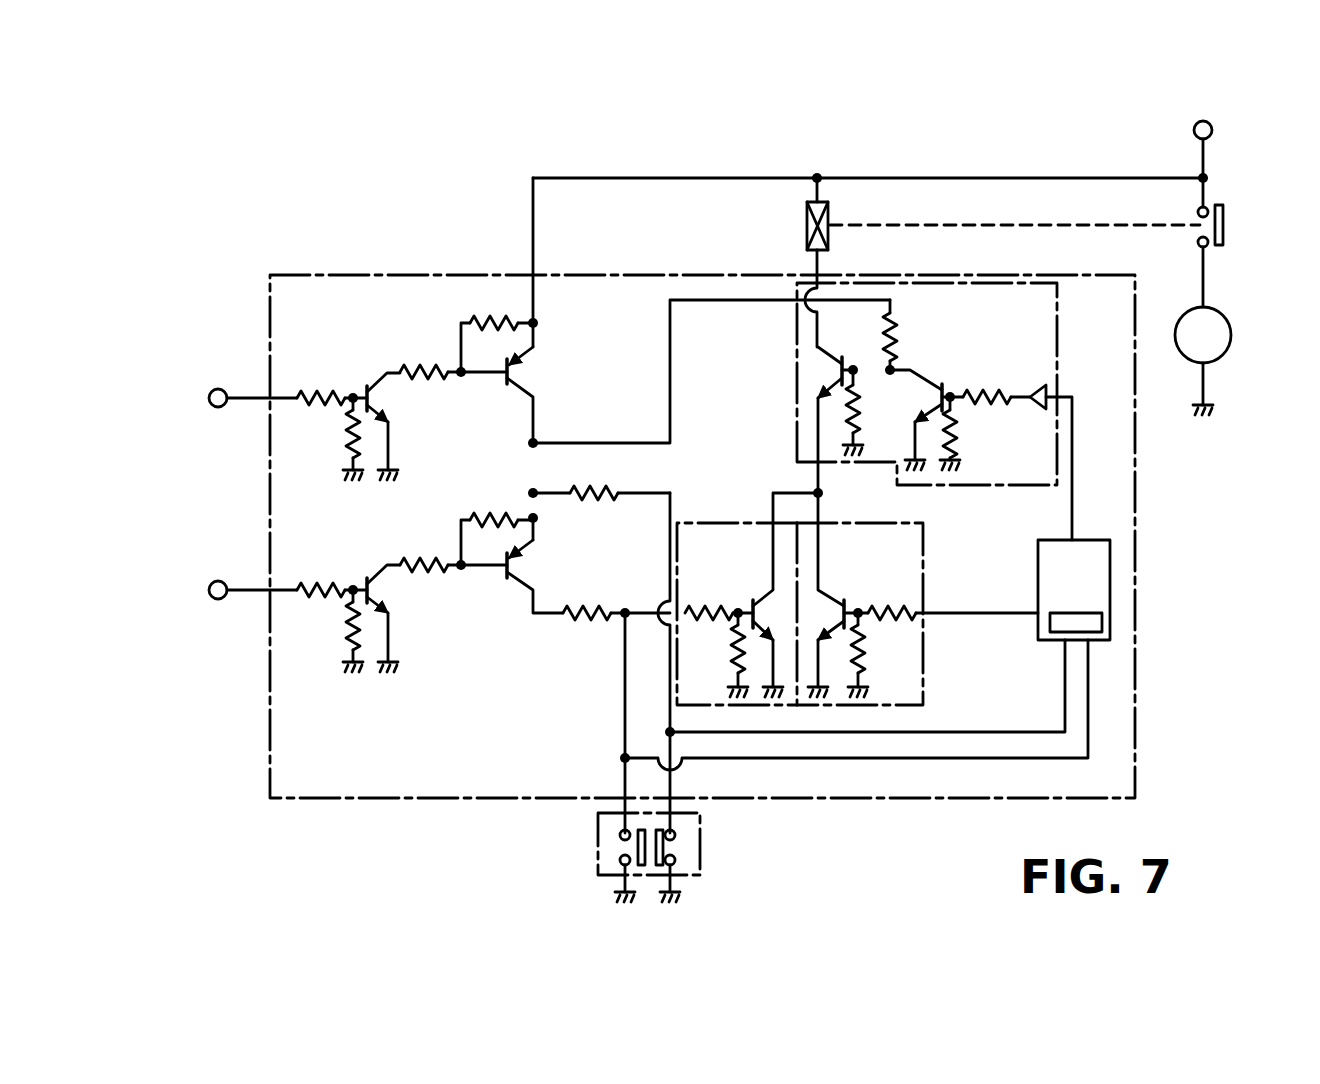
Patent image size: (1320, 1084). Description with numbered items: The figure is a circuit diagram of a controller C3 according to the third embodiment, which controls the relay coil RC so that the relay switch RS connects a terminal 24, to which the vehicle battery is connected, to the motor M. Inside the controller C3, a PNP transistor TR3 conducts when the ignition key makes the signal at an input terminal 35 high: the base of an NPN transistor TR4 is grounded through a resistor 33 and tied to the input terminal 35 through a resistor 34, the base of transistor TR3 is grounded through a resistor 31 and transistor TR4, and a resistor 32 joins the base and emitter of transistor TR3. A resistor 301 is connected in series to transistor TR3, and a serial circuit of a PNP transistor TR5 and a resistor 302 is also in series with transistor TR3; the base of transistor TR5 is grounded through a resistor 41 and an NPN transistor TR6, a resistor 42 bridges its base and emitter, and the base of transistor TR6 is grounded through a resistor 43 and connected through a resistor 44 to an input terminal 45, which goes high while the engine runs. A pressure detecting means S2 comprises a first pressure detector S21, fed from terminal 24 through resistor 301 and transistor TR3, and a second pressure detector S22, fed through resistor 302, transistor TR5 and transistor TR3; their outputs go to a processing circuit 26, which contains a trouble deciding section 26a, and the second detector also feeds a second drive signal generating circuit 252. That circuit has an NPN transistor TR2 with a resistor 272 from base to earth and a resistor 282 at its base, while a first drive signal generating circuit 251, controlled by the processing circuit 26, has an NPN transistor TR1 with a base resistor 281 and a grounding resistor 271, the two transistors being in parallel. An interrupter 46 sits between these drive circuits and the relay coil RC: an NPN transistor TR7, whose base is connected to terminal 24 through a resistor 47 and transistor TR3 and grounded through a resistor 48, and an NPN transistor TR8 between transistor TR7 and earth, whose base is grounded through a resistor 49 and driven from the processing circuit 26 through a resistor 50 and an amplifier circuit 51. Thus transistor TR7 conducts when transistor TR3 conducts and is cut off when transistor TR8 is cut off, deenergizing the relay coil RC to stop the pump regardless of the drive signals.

The terminal 24 is at (1212, 130).
The relay coil RC is at (805, 230).
The relay switch RS is at (1223, 225).
The motor M is at (1228, 337).
The input terminal 35 is at (218, 407).
The resistor 34 is at (310, 390).
The resistor 33 is at (350, 432).
The NPN transistor TR4 is at (365, 386).
The resistor 31 is at (412, 365).
The resistor 32 is at (495, 318).
The PNP transistor TR3 is at (507, 384).
The resistor 42 is at (485, 515).
The PNP transistor TR5 is at (507, 580).
The resistor 301 is at (600, 492).
The resistor 302 is at (575, 610).
The input terminal 45 is at (218, 599).
The resistor 44 is at (322, 585).
The resistor 43 is at (350, 630).
The NPN transistor TR6 is at (367, 580).
The resistor 41 is at (444, 577).
The second drive signal generating circuit 252 is at (697, 520).
The first drive signal generating circuit 251 is at (905, 510).
The resistor 282 is at (713, 610).
The NPN transistor TR2 is at (753, 600).
The resistor 272 is at (733, 650).
The NPN transistor TR1 is at (844, 600).
The resistor 281 is at (890, 608).
The resistor 271 is at (862, 652).
The NPN transistor TR7 is at (835, 362).
The resistor 47 is at (895, 335).
The resistor 48 is at (858, 402).
The NPN transistor TR8 is at (943, 384).
The resistor 50 is at (998, 393).
The resistor 49 is at (955, 436).
The amplifier circuit 51 is at (1042, 410).
The interrupter 46 is at (1052, 397).
The processing circuit 26 is at (1092, 606).
The trouble deciding section 26a is at (1060, 622).
The controller C3 is at (1138, 660).
The pressure detecting means S2 is at (690, 878).
The second pressure detector S22 is at (638, 847).
The first pressure detector S21 is at (664, 848).